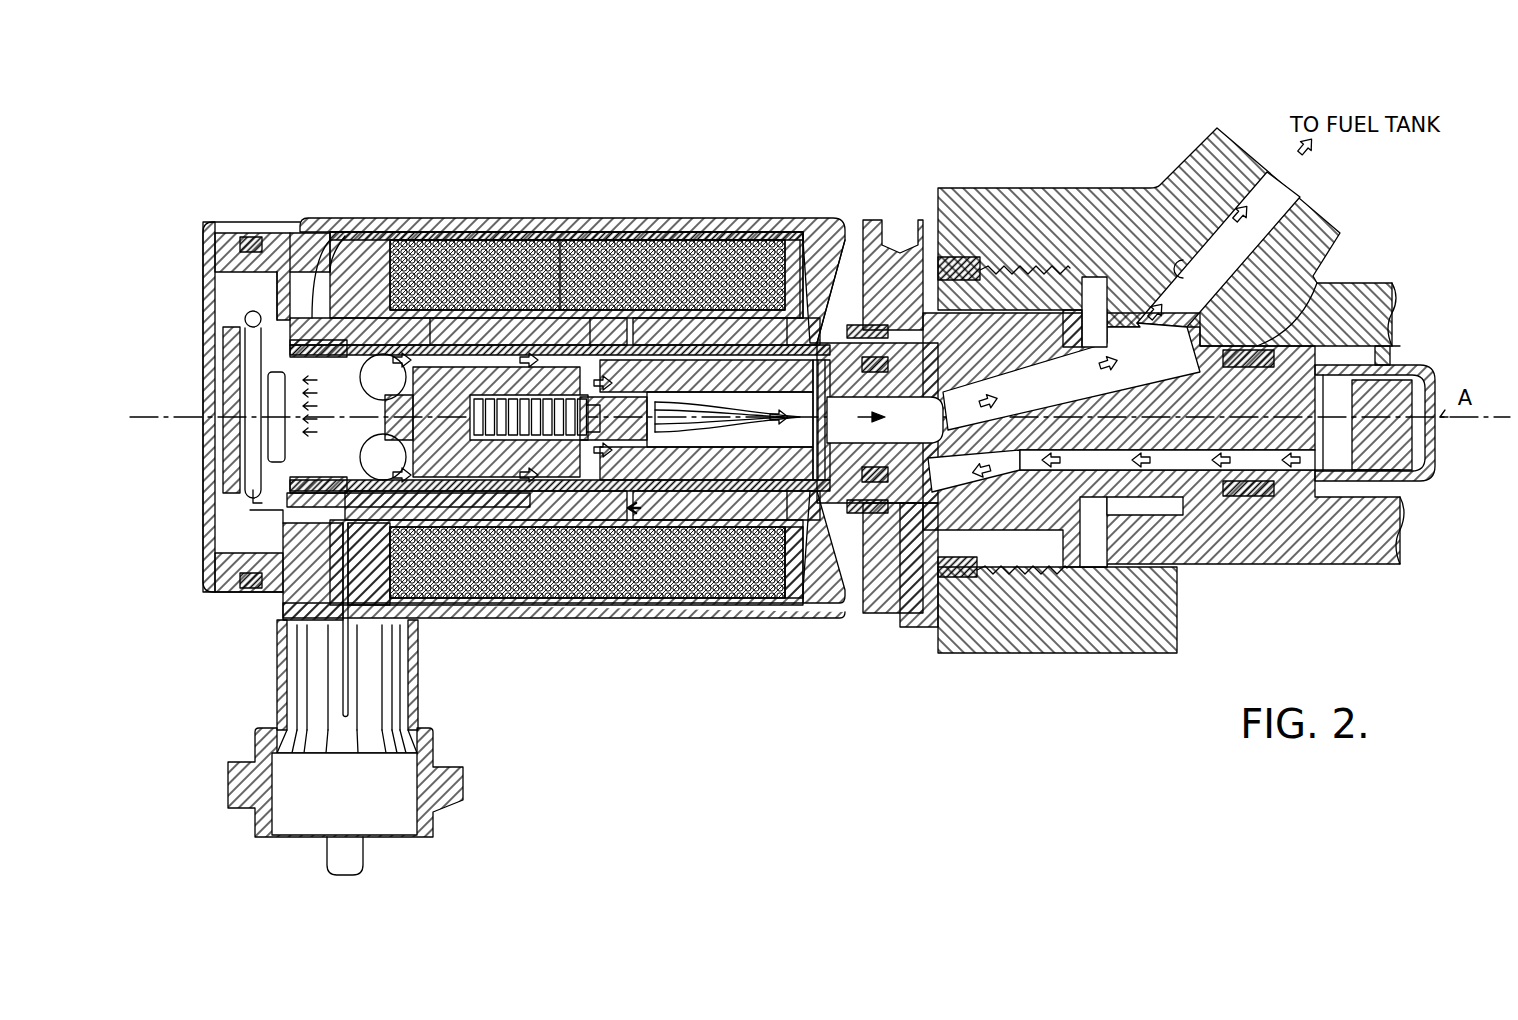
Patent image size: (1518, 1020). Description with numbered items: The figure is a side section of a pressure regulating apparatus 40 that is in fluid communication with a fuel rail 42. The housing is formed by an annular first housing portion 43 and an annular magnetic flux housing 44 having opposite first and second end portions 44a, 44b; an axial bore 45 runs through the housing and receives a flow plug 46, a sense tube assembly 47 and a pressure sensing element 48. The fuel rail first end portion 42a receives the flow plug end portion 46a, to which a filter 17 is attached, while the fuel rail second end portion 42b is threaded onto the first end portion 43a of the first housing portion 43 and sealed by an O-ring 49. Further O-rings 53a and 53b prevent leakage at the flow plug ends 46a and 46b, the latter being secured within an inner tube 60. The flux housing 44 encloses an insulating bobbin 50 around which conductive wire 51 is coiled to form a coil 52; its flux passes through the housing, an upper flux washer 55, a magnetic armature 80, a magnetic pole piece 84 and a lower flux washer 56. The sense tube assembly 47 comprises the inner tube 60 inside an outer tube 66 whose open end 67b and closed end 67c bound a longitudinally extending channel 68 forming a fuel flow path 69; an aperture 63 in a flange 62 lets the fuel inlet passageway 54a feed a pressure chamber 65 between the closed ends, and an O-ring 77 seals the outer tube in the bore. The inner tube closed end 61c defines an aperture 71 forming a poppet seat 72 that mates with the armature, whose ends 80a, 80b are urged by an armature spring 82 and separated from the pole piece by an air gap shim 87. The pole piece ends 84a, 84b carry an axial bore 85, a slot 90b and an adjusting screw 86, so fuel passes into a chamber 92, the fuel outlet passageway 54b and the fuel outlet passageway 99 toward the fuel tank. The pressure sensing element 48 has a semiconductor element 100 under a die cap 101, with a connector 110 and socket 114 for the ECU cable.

The filter 17 is at (1436, 430).
The pressure regulating apparatus 40 is at (985, 130).
The fuel rail 42 is at (1318, 212).
The fuel rail first end portion 42a is at (1390, 360).
The fuel rail second end portion 42b is at (1130, 600).
The annular first housing portion 43 is at (865, 250).
The first housing portion first end portion 43a is at (1000, 600).
The annular magnetic flux housing 44 is at (620, 216).
The flux housing first end portion 44a is at (852, 240).
The flux housing second end portion 44b is at (206, 318).
The axial bore 45 is at (800, 248).
The flow plug 46 is at (1082, 568).
The flow plug end portion 46a is at (1322, 490).
The flow plug second end portion 46b is at (790, 560).
The sense tube assembly 47 is at (622, 500).
The pressure sensing element 48 is at (236, 512).
The O-ring 49 is at (916, 600).
The insulating bobbin 50 is at (372, 240).
The conductive wire 51 is at (516, 247).
The coil 52 is at (590, 245).
The O-ring 53a is at (1295, 320).
The O-ring 53b is at (888, 250).
The fuel inlet passageway 54a is at (1178, 480).
The fuel outlet passageway 54b is at (1088, 275).
The upper flux washer 55 is at (345, 236).
The lower flux washer 56 is at (808, 250).
The inner tube 60 is at (568, 480).
The inner tube closed end 61c is at (332, 232).
The flange 62 is at (1000, 245).
The aperture 63 is at (886, 590).
The pressure chamber 65 is at (292, 232).
The outer tube 66 is at (487, 480).
The outer tube open end 67b is at (926, 250).
The outer tube closed end 67c is at (278, 233).
The longitudinally extending channel 68 is at (742, 520).
The fuel flow path 69 is at (682, 470).
The aperture 71 is at (397, 418).
The poppet seat 72 is at (366, 436).
The O-ring 77 is at (268, 594).
The magnetic armature 80 is at (446, 508).
The armature first end 80a is at (524, 520).
The armature second end 80b is at (388, 392).
The armature spring 82 is at (461, 243).
The magnetic pole piece 84 is at (712, 245).
The pole piece first end 84a is at (832, 395).
The pole piece second end 84b is at (540, 520).
The axial bore 85 is at (702, 490).
The adjusting screw 86 is at (668, 250).
The air gap shim 87 is at (562, 243).
The slot 90b is at (652, 492).
The chamber 92 is at (928, 440).
The fuel outlet passageway 99 is at (1188, 272).
The semiconductor element 100 is at (268, 377).
The die cap 101 is at (270, 447).
The electrical connector 110 is at (332, 690).
The socket 114 is at (448, 782).